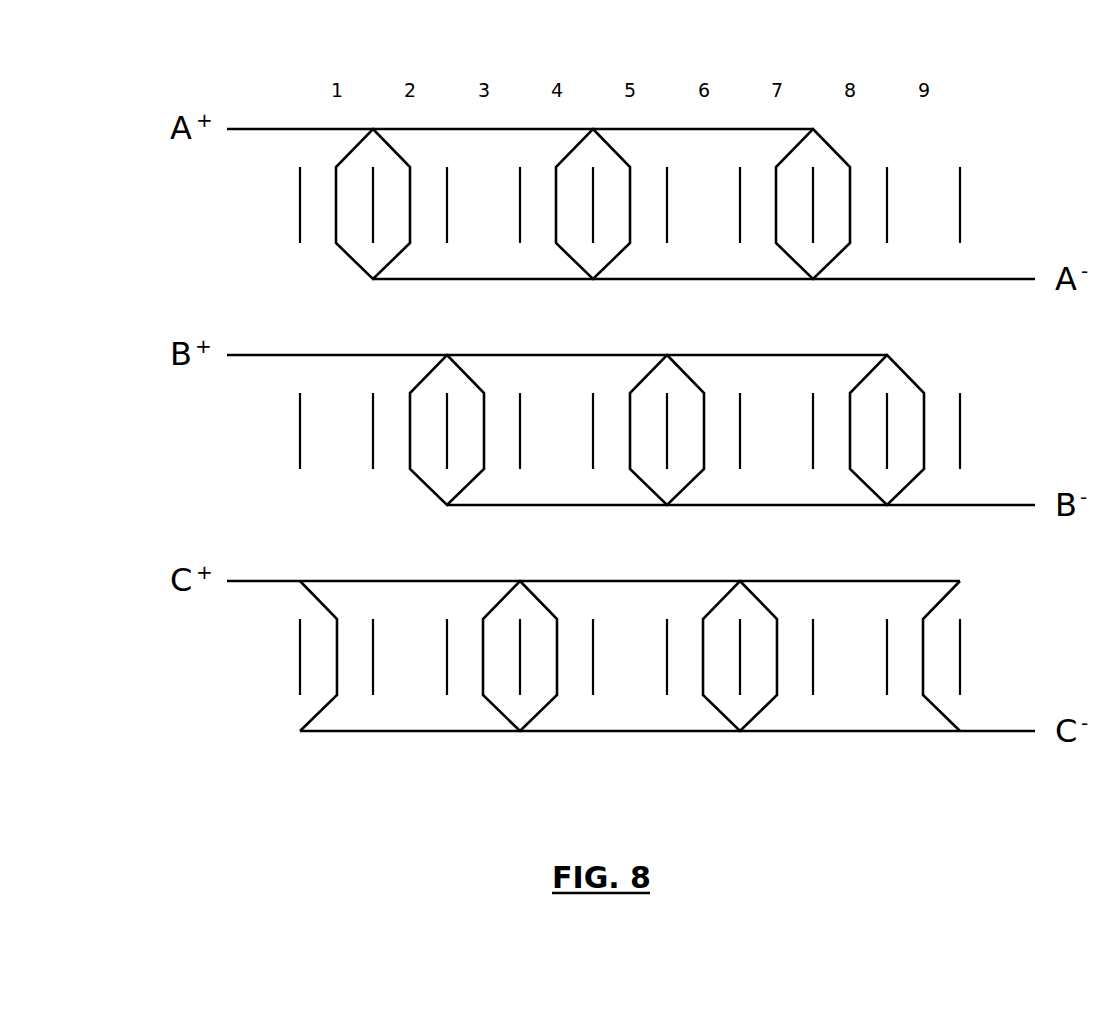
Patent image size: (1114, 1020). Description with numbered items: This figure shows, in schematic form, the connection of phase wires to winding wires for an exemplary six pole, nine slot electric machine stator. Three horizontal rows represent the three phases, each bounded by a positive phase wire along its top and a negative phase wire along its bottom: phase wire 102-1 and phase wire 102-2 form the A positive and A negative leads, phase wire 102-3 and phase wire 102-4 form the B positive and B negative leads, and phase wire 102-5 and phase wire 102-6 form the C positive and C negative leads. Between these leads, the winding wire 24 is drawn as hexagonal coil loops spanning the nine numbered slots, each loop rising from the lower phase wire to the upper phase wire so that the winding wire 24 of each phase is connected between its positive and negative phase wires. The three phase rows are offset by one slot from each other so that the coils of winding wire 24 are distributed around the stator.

The phase wire 102-1 is at (263, 129).
The phase wire 102-2 is at (648, 279).
The phase wire 102-3 is at (317, 355).
The phase wire 102-4 is at (702, 505).
The phase wire 102-5 is at (371, 581).
The phase wire 102-6 is at (630, 731).
The winding wire 24 is at (395, 151).